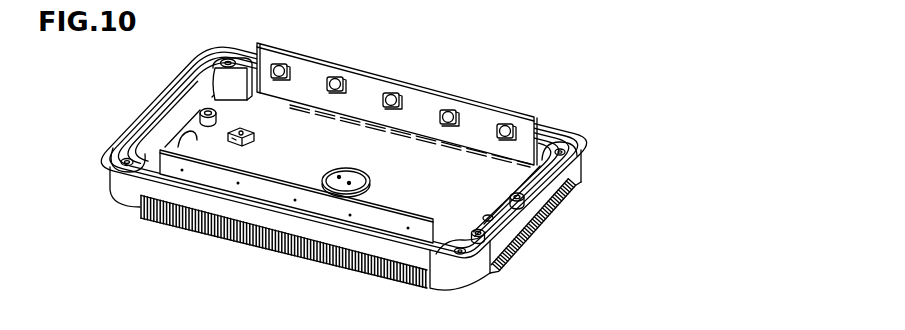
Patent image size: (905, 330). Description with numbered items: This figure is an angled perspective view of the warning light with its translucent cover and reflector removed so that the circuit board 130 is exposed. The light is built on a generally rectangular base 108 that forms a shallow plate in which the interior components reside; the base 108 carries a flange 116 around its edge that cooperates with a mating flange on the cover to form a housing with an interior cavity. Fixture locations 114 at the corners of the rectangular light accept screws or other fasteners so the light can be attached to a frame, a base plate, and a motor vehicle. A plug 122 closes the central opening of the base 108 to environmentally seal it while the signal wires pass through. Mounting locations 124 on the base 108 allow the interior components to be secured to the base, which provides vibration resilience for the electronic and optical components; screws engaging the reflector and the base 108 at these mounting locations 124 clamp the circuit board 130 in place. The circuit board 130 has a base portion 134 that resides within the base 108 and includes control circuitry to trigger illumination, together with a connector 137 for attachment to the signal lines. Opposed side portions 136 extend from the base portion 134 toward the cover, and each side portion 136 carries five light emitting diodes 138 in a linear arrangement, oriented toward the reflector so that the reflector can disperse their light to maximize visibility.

The base 108 is at (125, 201).
The fixture locations 114 is at (228, 60).
The flange 116 is at (423, 258).
The plug 122 is at (332, 172).
The mounting locations 124 is at (205, 108).
The circuit board 130 is at (193, 126).
The base portion 134 is at (485, 186).
The side portions 136 is at (160, 146).
The connector 137 is at (240, 127).
The light emitting diodes (LEDs) 138 is at (502, 128).